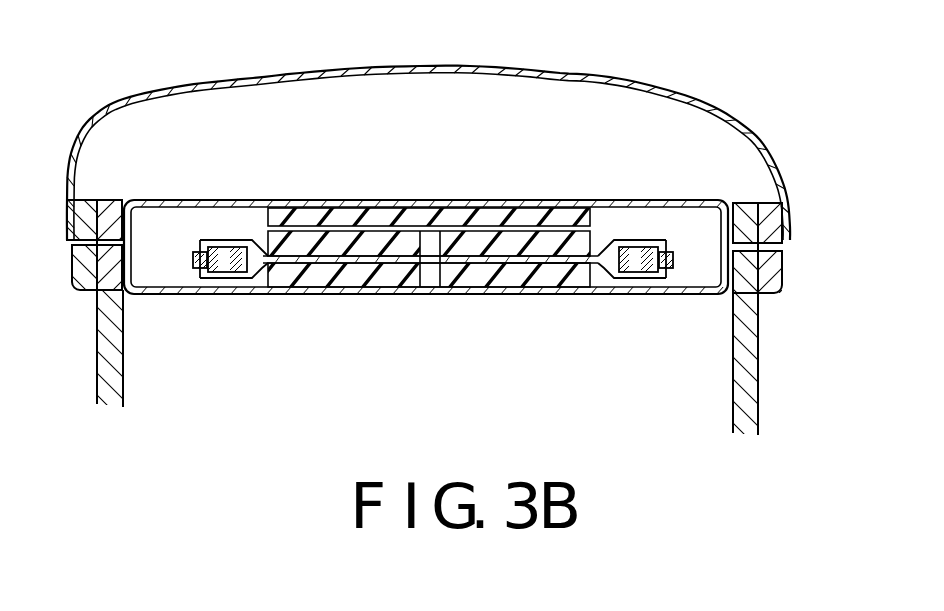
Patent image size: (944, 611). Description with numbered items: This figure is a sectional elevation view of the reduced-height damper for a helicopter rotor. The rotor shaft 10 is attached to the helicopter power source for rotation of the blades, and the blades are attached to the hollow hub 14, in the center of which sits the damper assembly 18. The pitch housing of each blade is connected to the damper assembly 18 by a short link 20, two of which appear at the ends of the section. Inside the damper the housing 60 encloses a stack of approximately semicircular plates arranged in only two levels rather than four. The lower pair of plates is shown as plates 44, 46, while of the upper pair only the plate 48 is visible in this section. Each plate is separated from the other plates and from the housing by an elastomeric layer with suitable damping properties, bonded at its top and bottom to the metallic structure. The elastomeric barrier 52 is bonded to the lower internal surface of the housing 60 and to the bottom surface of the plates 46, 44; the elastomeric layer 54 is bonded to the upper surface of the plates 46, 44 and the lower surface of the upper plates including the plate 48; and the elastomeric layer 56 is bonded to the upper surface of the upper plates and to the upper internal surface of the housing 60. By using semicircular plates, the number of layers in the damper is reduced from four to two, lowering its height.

The shaft 10 is at (760, 413).
The hub 14 is at (784, 278).
The damper assembly 18 is at (557, 67).
The short link 20 is at (223, 280).
The lower plate 44 is at (548, 283).
The lower plate 46 is at (303, 278).
The upper plate 48 is at (478, 231).
The elastomeric barrier 52 is at (463, 283).
The elastomeric layer 54 is at (443, 231).
The elastomeric layer 56 is at (302, 212).
The housing 60 is at (508, 283).